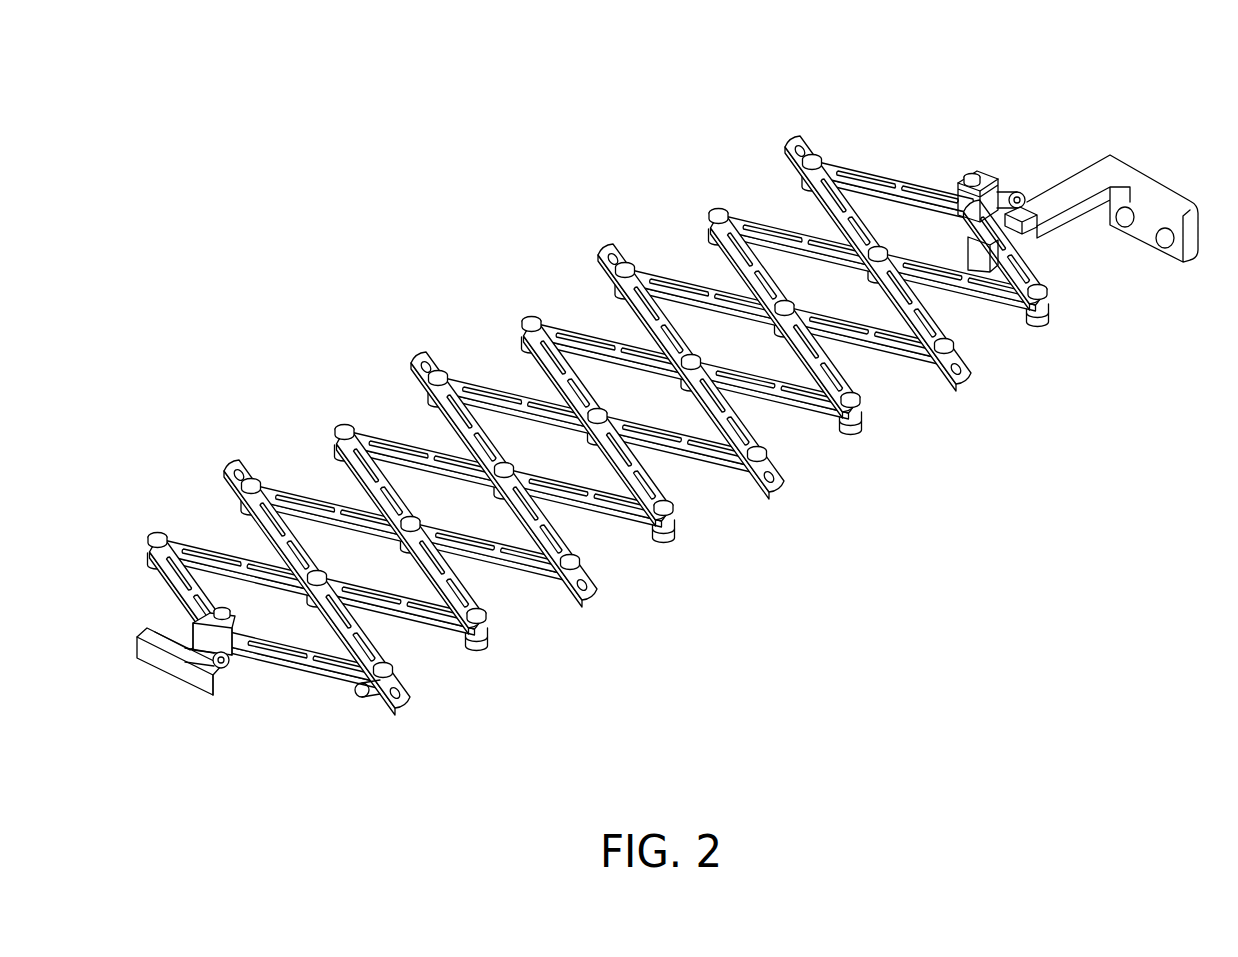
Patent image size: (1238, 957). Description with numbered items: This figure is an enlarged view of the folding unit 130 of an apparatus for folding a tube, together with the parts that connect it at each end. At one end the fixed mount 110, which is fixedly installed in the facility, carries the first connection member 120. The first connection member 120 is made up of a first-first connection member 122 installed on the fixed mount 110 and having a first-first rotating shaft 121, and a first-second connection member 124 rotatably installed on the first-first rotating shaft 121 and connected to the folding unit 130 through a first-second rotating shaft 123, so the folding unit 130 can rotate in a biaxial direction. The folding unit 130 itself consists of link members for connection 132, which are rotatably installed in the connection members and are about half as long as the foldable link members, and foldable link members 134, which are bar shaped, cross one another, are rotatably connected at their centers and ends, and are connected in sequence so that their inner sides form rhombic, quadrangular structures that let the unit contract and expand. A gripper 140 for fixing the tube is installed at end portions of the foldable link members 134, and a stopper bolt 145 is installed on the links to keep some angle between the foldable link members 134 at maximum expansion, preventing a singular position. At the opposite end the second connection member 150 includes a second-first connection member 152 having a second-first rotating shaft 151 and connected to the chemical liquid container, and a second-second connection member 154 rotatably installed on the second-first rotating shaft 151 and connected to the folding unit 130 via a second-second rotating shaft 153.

The fixed mount 110 is at (1133, 180).
The first connection member 120 is at (992, 161).
The 1-1 rotating shaft 121 is at (1026, 194).
The 1-1 connection member 122 is at (1045, 167).
The 1-2 rotating shaft 123 is at (970, 176).
The 1-2 connection member 124 is at (998, 180).
The folding unit 130 is at (598, 465).
The link member for connection 132 is at (183, 643).
The foldable link member 134 is at (718, 462).
The gripper 140 is at (782, 485).
The stopper bolt 145 is at (372, 702).
The second connection member 150 is at (200, 711).
The 2-1 rotating shaft 151 is at (217, 662).
The 2-1 connection member 152 is at (172, 663).
The 2-2 rotating shaft 153 is at (232, 655).
The 2-2 connection member 154 is at (200, 645).